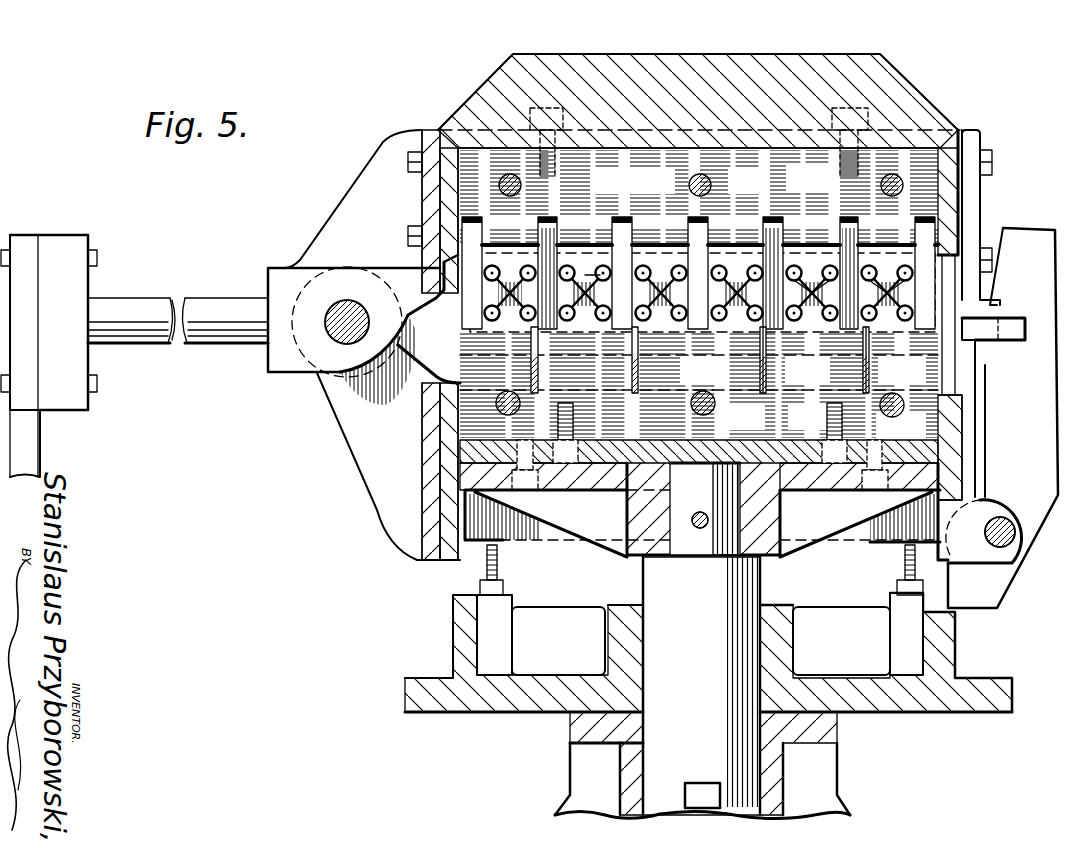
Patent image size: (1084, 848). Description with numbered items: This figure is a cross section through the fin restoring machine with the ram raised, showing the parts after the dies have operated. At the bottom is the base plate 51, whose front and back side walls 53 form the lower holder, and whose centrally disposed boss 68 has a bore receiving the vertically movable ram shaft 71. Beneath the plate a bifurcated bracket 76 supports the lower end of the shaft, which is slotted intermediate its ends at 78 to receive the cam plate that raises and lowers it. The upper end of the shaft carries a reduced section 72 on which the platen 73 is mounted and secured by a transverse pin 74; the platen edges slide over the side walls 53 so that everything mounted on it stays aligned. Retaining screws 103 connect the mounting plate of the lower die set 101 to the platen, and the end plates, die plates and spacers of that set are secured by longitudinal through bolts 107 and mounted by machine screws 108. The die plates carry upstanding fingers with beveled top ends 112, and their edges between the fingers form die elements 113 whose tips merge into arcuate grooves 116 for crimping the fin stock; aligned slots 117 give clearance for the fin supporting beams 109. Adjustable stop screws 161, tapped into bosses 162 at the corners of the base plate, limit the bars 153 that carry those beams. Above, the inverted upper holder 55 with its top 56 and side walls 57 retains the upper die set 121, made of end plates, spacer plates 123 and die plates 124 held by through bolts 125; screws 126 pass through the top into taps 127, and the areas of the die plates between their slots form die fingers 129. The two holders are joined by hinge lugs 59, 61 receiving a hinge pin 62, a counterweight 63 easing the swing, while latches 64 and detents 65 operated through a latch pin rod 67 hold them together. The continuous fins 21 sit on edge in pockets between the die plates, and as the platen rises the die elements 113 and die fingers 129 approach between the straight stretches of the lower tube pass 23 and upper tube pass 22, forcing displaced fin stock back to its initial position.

The fins 21 is at (643, 292).
The upper tube pass 22 is at (718, 292).
The lower tube pass 23 is at (880, 300).
The base plate 51 is at (420, 692).
The side walls 53 is at (447, 448).
The upper holder 55 is at (508, 63).
The top 56 is at (488, 131).
The side walls 57 is at (437, 198).
The hinge lug 59 is at (345, 197).
The hinge lug 61 is at (352, 450).
The hinge pin 62 is at (340, 330).
The counterweight 63 is at (70, 400).
The latches 64 is at (1003, 369).
The detents 65 is at (991, 310).
The latch pin rod 67 is at (1003, 520).
The boss 68 is at (776, 642).
The ram shaft 71 is at (701, 686).
The reduced section 72 is at (737, 490).
The platen 73 is at (798, 528).
The transverse pin 74 is at (700, 530).
The bifurcated bracket 76 is at (740, 707).
The longitudinal slot 78 is at (697, 783).
The lower die set 101 is at (925, 412).
The retaining screws 103 is at (866, 483).
The through bolts 107 is at (713, 407).
The machine screws 108 is at (838, 418).
The beams 109 is at (867, 390).
The beveled top ends 112 is at (460, 228).
The die elements 113 is at (665, 312).
The arcuate grooves 116 is at (898, 305).
The aligned slots 117 is at (781, 338).
The upper die set 121 is at (916, 166).
The spacer plates 123 is at (566, 185).
The die plates 124 is at (592, 272).
The through bolts 125 is at (713, 187).
The screws 126 is at (525, 112).
The taps 127 is at (842, 168).
The die fingers 129 is at (812, 278).
The bar 153 is at (870, 543).
The adjustable stop screws 161 is at (467, 570).
The bosses 162 is at (492, 620).